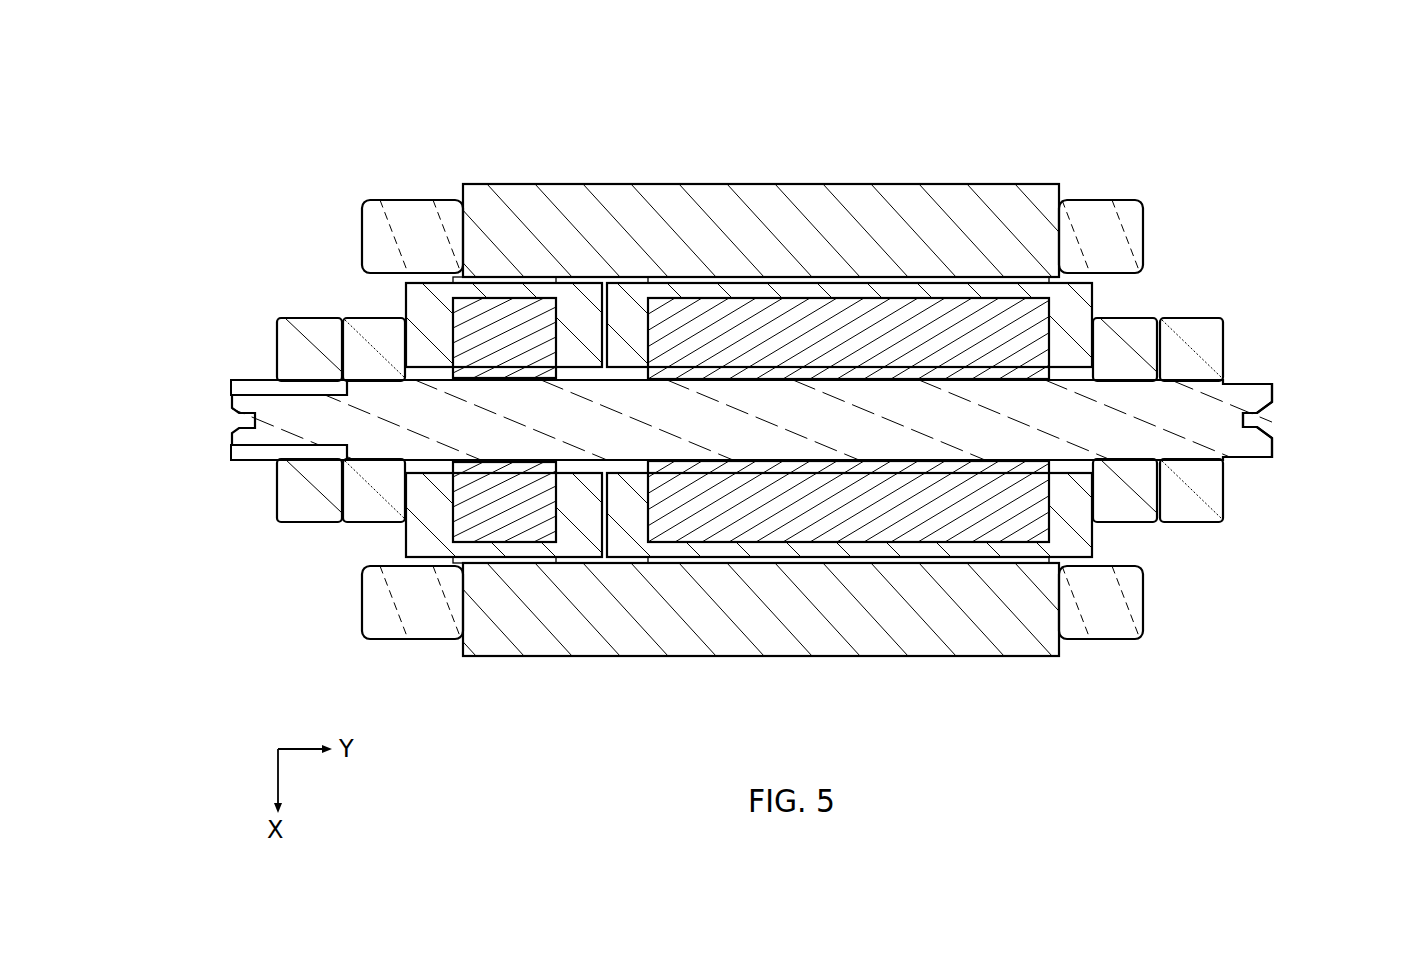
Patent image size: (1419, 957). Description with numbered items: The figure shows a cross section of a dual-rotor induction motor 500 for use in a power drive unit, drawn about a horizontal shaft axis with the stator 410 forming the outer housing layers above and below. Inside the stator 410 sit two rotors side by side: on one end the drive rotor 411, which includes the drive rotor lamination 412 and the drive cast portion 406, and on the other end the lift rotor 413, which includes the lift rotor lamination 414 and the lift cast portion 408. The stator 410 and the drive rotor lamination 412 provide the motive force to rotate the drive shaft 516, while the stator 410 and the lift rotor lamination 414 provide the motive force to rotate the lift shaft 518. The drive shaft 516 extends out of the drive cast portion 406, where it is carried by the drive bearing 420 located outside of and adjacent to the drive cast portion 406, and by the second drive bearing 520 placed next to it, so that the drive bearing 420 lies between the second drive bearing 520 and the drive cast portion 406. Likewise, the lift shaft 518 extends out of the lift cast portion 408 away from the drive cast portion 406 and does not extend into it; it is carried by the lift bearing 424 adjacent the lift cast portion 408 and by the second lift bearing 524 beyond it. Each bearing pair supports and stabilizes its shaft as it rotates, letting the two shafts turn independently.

The motor 500 is at (309, 139).
The drive cast portion 406 is at (1068, 521).
The lift cast portion 408 is at (428, 530).
The stator 410 is at (535, 599).
The drive rotor 411 is at (1262, 298).
The drive rotor lamination 412 is at (1023, 322).
The lift rotor 413 is at (240, 320).
The lift rotor lamination 414 is at (467, 322).
The drive bearing 420 is at (1145, 502).
The lift bearing 424 is at (353, 521).
The drive shaft 516 is at (1248, 437).
The lift shaft 518 is at (278, 434).
The second drive bearing 520 is at (1190, 347).
The second lift bearing 524 is at (310, 339).